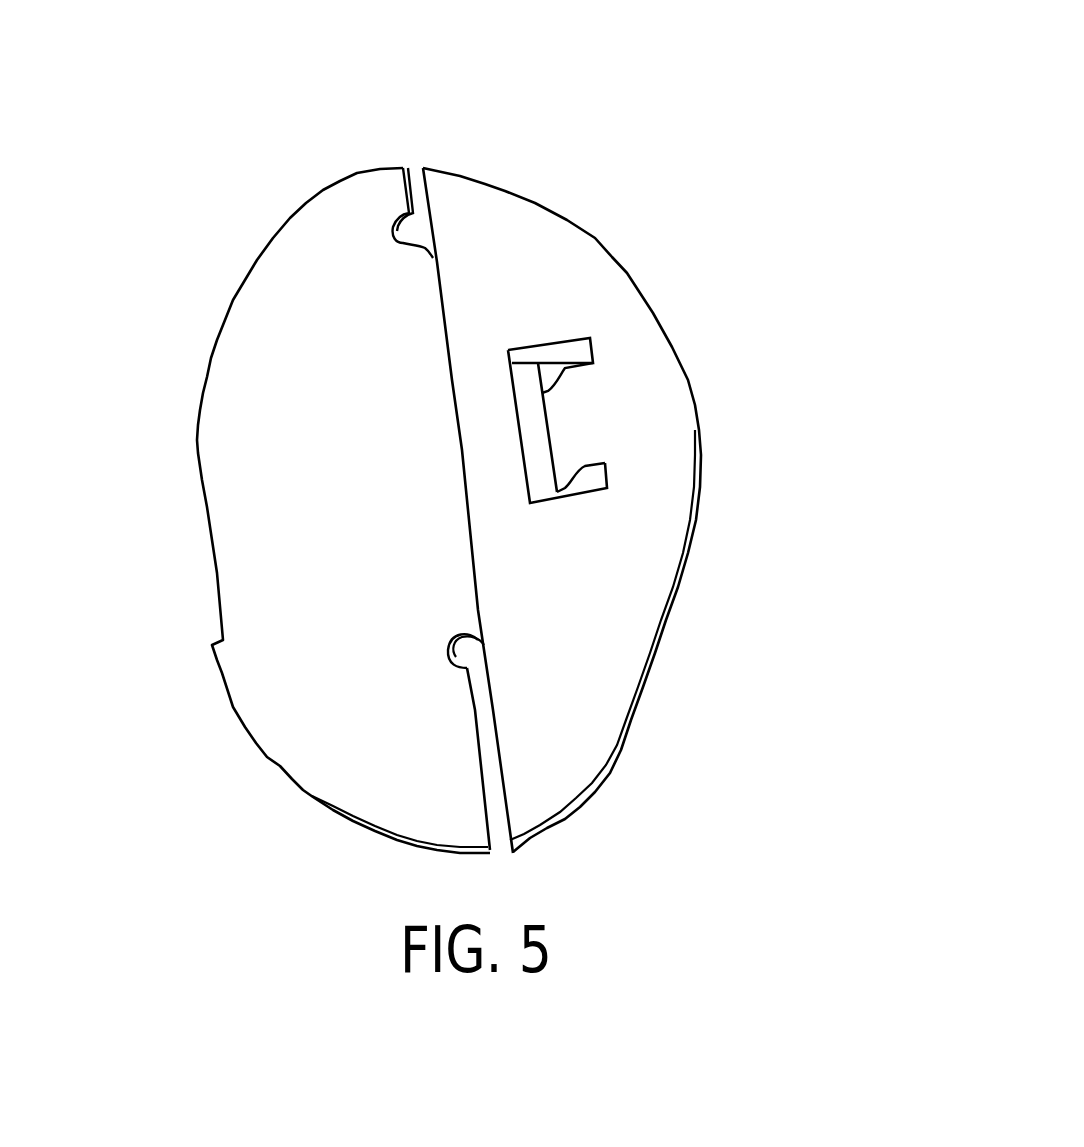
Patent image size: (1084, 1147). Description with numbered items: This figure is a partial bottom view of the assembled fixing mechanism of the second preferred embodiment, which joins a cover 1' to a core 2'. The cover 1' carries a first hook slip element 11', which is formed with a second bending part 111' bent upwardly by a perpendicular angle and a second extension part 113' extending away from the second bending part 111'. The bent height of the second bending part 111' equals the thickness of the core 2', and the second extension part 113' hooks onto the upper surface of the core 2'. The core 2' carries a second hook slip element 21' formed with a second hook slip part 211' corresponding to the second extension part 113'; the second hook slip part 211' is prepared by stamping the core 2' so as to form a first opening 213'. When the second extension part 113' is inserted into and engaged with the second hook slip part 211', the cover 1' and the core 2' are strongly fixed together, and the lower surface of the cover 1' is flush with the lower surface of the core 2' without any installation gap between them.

The cover 1' is at (271, 510).
The core 2' is at (630, 510).
The first hook slip element 11' is at (557, 336).
The second bending part 111' is at (491, 171).
The second extension part 113' is at (585, 376).
The second hook slip element 21' is at (726, 420).
The second hook slip part 211' is at (700, 380).
The first opening 213' is at (707, 443).